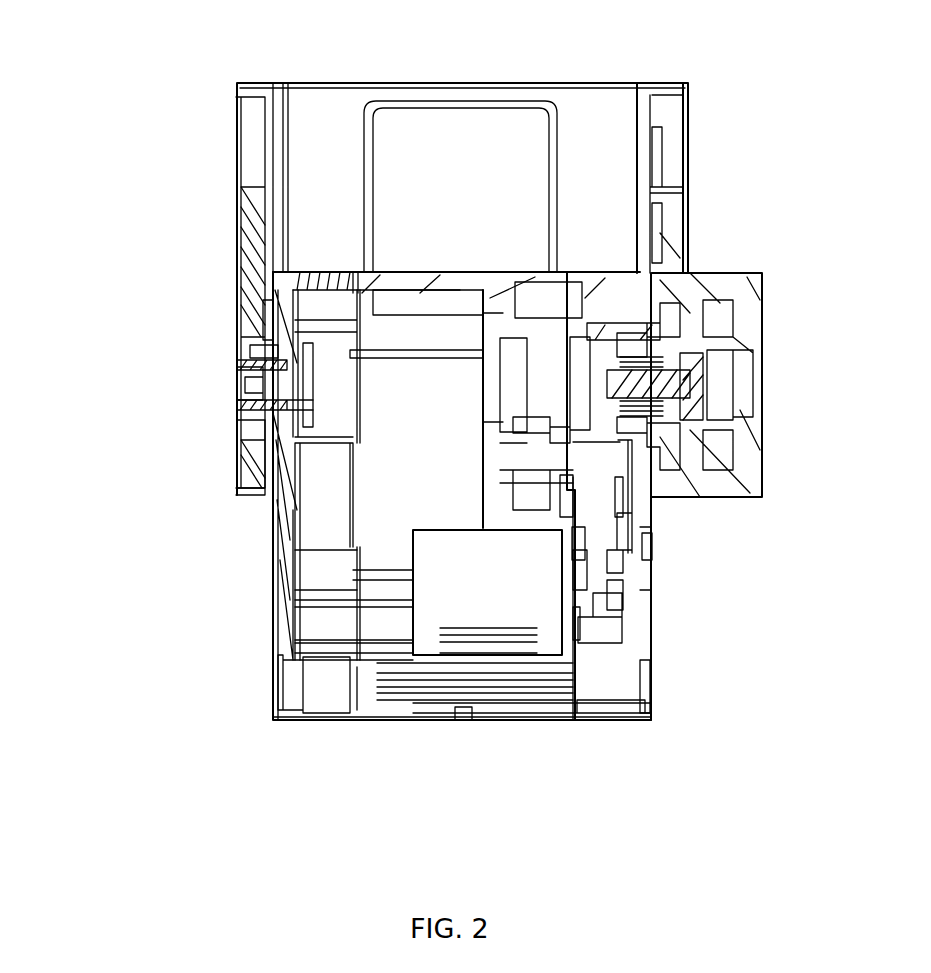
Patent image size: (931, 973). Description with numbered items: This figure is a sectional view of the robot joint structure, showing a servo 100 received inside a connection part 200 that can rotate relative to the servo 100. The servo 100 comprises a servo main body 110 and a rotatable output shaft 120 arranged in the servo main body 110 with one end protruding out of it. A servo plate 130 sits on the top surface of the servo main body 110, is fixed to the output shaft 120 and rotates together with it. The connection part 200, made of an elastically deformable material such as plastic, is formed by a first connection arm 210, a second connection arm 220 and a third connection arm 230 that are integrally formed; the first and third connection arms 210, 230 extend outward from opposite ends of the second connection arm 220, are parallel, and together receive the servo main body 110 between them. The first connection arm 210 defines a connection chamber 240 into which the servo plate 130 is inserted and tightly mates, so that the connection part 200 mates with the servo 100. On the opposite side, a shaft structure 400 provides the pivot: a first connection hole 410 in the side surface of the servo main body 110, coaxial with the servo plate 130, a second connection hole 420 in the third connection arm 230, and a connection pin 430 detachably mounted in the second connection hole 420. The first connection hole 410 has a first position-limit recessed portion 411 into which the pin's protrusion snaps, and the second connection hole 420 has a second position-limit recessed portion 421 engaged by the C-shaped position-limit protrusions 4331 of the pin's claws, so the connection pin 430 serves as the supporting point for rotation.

The servo 100 is at (275, 718).
The servo main body 110 is at (277, 633).
The output shaft 120 is at (653, 492).
The servo plate 130 is at (705, 452).
The connection part 200 is at (238, 85).
The first connection arm 210 is at (668, 292).
The second connection arm 220 is at (473, 148).
The third connection arm 230 is at (242, 243).
The connection chamber 240 is at (755, 310).
The shaft structure 400 is at (164, 352).
The first connection hole 410 is at (245, 440).
The first position-limit recessed portion 411 is at (258, 322).
The second connection hole 420 is at (240, 387).
The second position-limit recessed portion 421 is at (256, 350).
The connection pin 430 is at (243, 410).
The position-limit protrusion 4331 is at (247, 365).